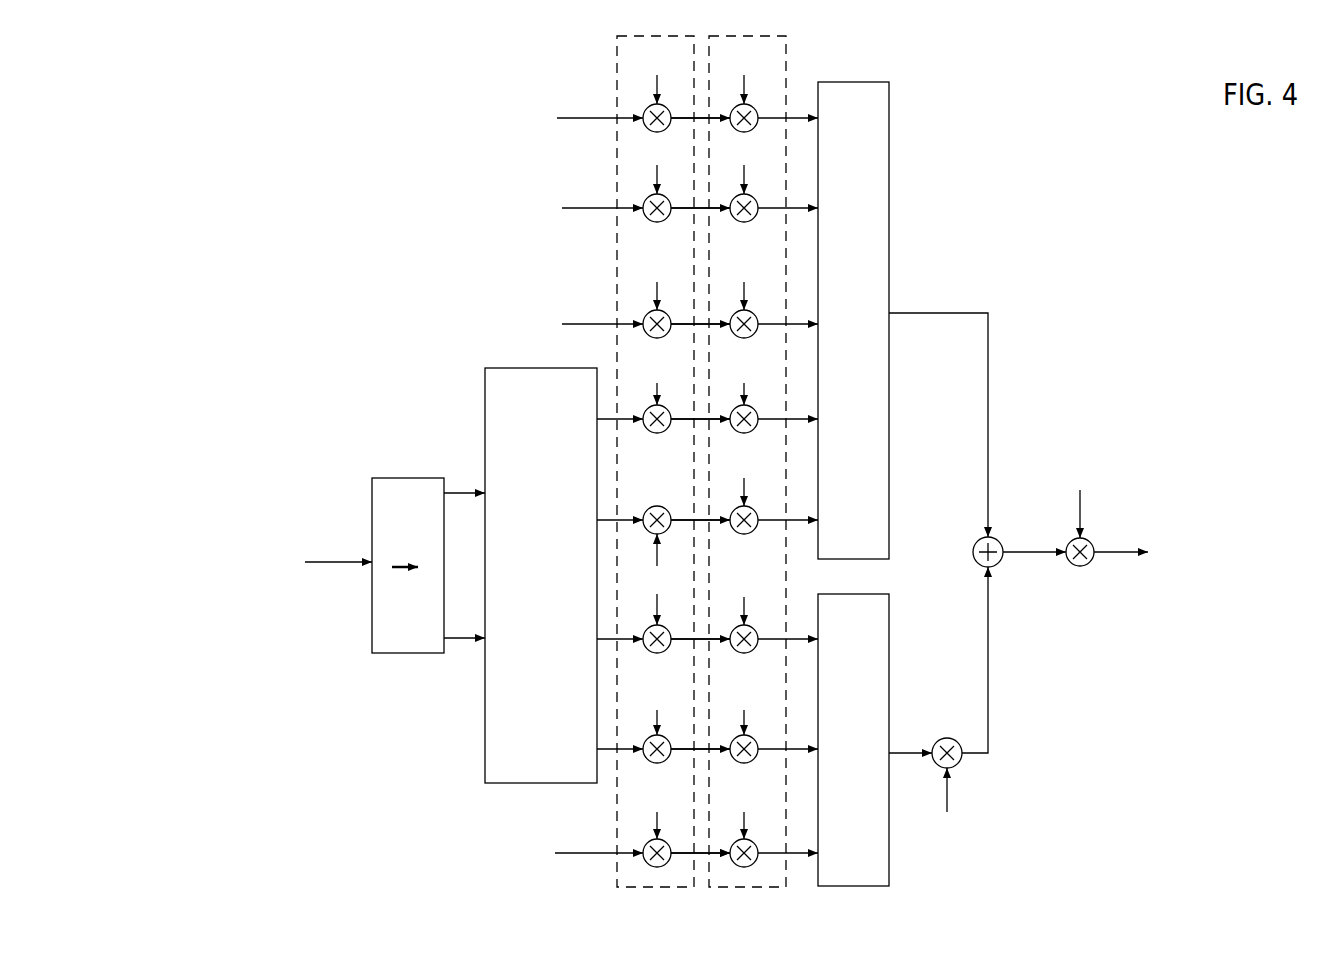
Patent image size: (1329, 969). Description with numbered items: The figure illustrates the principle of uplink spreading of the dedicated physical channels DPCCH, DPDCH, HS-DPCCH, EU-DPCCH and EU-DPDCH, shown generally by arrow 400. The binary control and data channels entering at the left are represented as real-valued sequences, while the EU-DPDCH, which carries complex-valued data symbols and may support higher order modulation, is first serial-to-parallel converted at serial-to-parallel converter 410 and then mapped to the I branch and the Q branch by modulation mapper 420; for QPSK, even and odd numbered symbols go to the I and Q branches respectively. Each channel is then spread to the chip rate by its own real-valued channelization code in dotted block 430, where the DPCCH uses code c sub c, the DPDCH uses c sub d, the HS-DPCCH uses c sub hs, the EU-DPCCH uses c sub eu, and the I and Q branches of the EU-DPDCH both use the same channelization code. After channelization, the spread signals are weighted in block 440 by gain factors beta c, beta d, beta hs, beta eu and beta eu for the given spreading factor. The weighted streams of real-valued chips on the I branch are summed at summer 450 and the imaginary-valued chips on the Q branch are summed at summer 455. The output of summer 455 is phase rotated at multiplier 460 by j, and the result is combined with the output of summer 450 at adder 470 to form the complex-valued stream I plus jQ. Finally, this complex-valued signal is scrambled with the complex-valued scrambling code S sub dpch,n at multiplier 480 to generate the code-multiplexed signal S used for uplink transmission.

The uplink spreading arrangement 400 is at (277, 162).
The serial-to-parallel converter 410 is at (403, 655).
The modulation mapper 420 is at (485, 762).
The channelization block 430 is at (617, 57).
The weighting block 440 is at (787, 65).
The I-branch summer 450 is at (889, 145).
The Q-branch summer 455 is at (889, 869).
The phase rotation multiplier 460 is at (958, 763).
The adder 470 is at (975, 555).
The scrambling multiplier 480 is at (1075, 567).